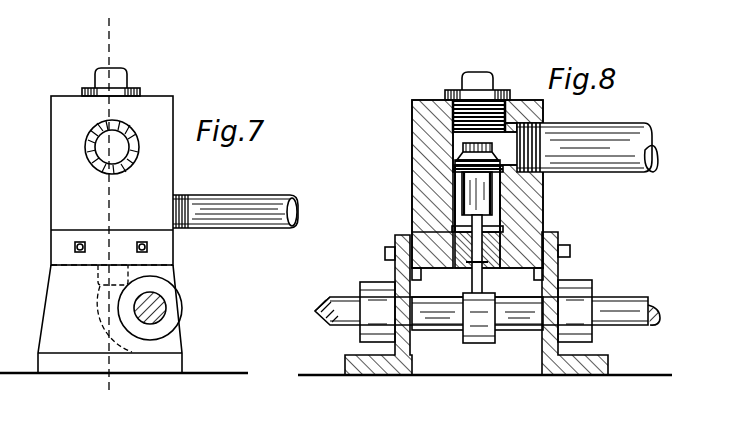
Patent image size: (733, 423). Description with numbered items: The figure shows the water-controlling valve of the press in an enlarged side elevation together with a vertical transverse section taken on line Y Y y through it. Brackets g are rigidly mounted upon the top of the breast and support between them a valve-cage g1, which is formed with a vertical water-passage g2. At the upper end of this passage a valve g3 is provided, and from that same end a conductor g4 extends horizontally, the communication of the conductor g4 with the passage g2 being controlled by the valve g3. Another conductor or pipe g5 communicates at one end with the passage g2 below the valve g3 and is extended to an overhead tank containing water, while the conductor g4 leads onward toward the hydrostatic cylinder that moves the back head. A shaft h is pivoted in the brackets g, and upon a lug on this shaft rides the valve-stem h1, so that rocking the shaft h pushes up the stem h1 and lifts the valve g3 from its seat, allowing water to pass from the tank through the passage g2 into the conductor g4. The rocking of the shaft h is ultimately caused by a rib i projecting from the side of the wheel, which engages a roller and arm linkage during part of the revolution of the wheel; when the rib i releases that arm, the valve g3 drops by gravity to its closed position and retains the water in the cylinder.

In FIG. 7, the section line Y Y y is at (103, 212).
In FIG. 7, the brackets g is at (124, 319).
In FIG. 8, the brackets g is at (395, 262).
In FIG. 7, the valve-cage g1 is at (112, 166).
In FIG. 8, the valve-cage g1 is at (412, 205).
In FIG. 8, the vertical water-passage g2 is at (455, 233).
In FIG. 8, the valve g3 is at (448, 163).
In FIG. 7, the conductor g4 is at (94, 136).
In FIG. 8, the conductor g4 is at (598, 175).
In FIG. 7, the conductor or pipe g5 is at (242, 197).
In FIG. 7, the shaft h is at (160, 303).
In FIG. 8, the shaft h is at (624, 307).
In FIG. 8, the valve-stem h1 is at (472, 283).
In FIG. 8, the rib i is at (479, 332).